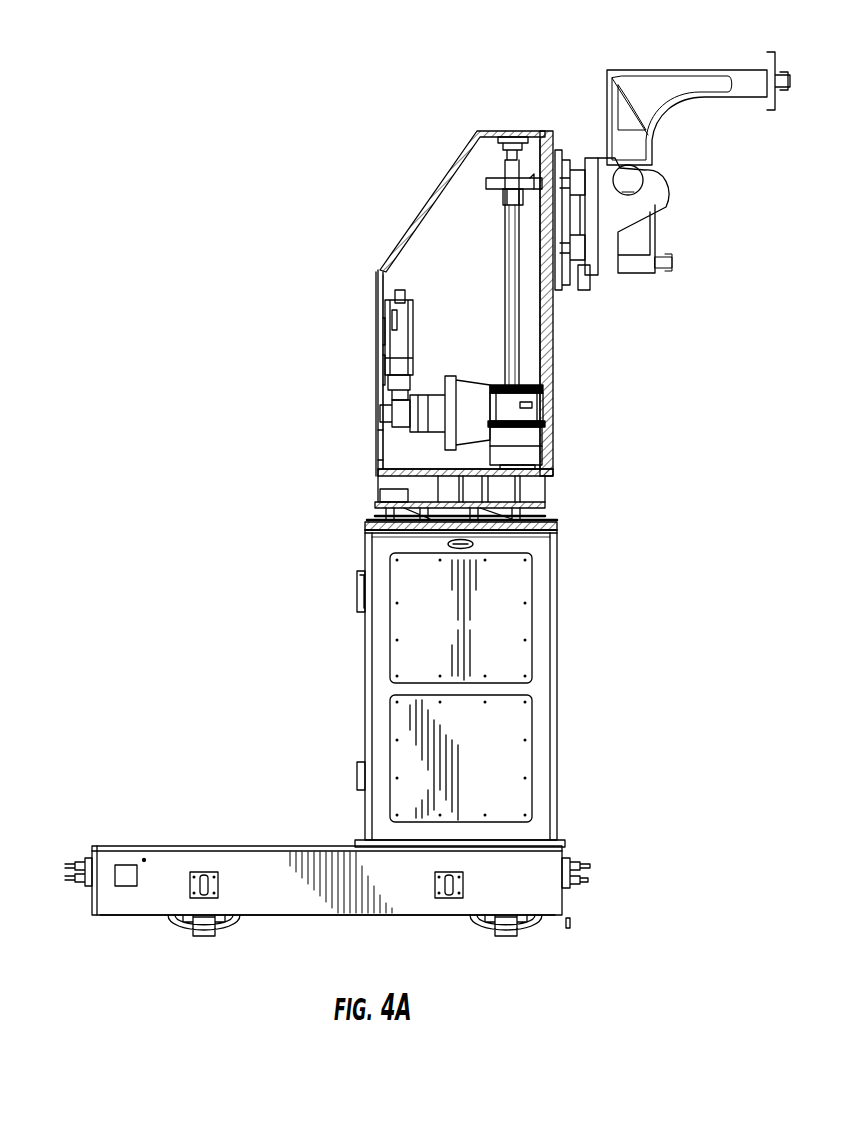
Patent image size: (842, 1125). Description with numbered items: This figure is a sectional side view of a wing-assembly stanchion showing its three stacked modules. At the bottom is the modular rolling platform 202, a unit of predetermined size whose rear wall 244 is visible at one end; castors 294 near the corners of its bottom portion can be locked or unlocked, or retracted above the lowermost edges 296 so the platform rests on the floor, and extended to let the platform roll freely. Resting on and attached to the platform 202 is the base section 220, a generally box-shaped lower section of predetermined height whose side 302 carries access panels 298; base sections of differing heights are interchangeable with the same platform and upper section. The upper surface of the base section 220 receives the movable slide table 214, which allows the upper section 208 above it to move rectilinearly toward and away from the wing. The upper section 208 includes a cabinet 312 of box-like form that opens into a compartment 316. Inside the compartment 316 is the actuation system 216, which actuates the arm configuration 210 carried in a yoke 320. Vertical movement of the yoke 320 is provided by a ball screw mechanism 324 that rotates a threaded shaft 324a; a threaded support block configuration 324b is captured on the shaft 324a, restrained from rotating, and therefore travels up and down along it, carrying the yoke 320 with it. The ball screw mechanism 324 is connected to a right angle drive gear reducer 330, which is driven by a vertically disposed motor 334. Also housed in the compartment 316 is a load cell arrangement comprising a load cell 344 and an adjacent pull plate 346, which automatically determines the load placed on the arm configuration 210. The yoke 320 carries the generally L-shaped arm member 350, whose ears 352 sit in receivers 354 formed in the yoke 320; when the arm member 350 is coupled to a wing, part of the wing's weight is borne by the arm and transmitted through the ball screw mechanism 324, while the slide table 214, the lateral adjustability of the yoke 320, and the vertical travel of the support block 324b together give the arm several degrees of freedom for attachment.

The modular rolling platform 202 is at (95, 848).
The upper section 208 is at (378, 283).
The arm configuration 210 is at (565, 100).
The movable slide table 214 is at (548, 520).
The actuation system 216 is at (398, 284).
The base section 220 is at (556, 660).
The rear wall 244 is at (573, 862).
The castors 294 is at (178, 935).
The lowermost edges 296 is at (413, 916).
The access panels 298 is at (512, 612).
The side 302 is at (378, 545).
The cabinet 312 is at (380, 443).
The compartment 316 is at (390, 462).
The yoke 320 is at (655, 196).
The ball screw mechanism 324 is at (551, 388).
The threaded shaft 324a is at (512, 261).
The threaded support block configuration 324b is at (492, 190).
The right angle drive gear reducer 330 is at (468, 405).
The motor 334 is at (417, 333).
The load cell 344 is at (556, 450).
The pull plate 346 is at (528, 433).
The L-shaped arm member 350 is at (716, 80).
The ears 352 is at (626, 178).
The receivers 354 is at (628, 195).